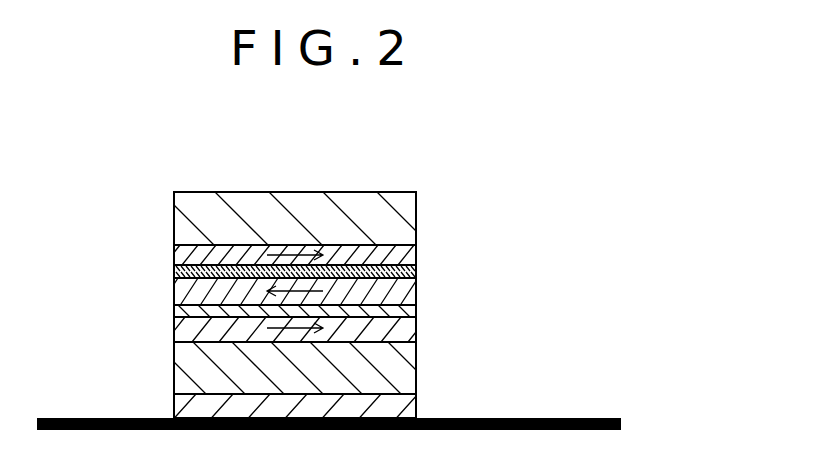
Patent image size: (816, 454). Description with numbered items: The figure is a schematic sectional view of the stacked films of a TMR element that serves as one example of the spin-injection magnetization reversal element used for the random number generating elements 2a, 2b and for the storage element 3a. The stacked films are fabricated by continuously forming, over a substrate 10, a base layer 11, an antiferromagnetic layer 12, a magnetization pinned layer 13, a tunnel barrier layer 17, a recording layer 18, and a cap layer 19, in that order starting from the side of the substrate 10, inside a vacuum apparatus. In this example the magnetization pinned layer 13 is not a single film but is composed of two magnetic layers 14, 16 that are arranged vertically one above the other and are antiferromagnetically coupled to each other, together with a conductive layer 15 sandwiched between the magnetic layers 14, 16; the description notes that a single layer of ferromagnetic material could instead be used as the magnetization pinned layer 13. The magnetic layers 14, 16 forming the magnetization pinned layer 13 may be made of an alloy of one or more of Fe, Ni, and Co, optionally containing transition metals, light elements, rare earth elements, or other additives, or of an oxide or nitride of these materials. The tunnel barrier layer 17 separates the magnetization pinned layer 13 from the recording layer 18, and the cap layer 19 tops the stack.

The random number generating element 2a is at (568, 135).
The random number generating element 2b is at (297, 304).
The storage element 3a is at (297, 304).
The substrate 10 is at (590, 418).
The base layer 11 is at (410, 401).
The antiferromagnetic layer 12 is at (410, 367).
The magnetization pinned layer 13 is at (297, 310).
The magnetic layer 14 is at (410, 330).
The conductive layer 15 is at (411, 307).
The magnetic layer 16 is at (410, 294).
The tunnel barrier layer 17 is at (410, 273).
The recording layer 18 is at (410, 257).
The cap layer 19 is at (409, 205).